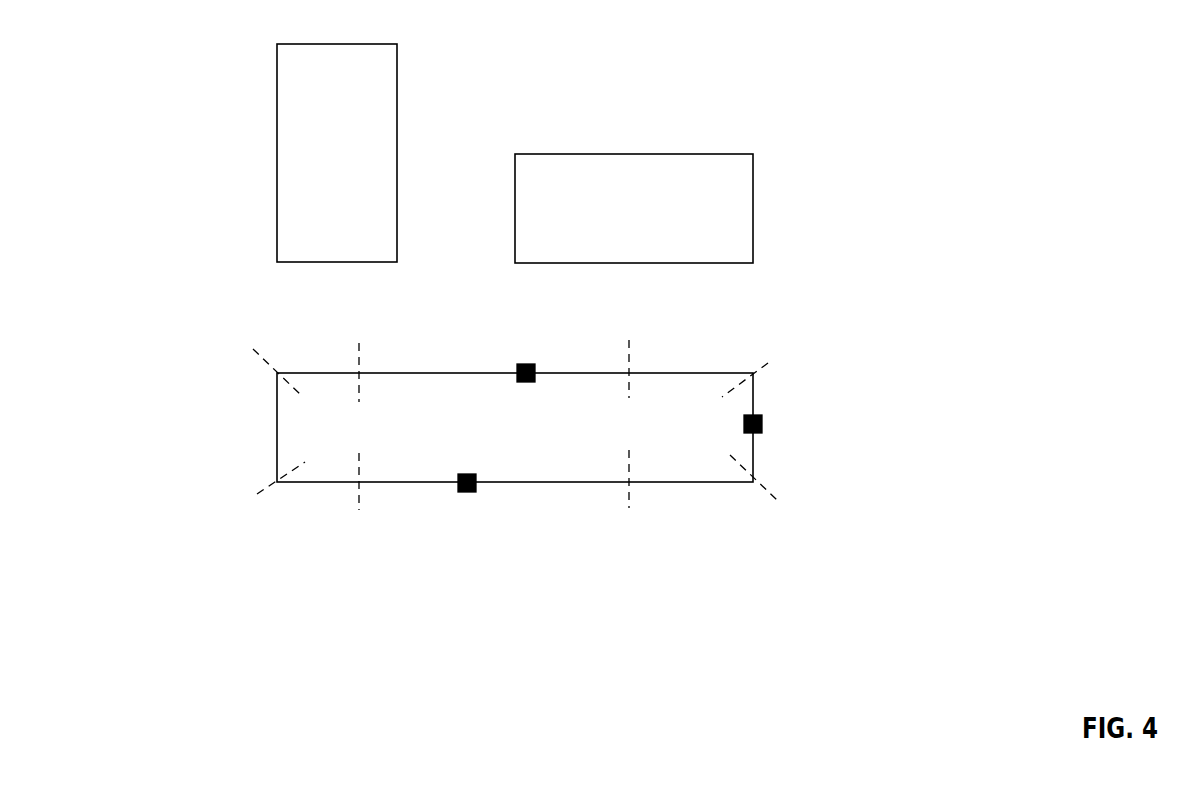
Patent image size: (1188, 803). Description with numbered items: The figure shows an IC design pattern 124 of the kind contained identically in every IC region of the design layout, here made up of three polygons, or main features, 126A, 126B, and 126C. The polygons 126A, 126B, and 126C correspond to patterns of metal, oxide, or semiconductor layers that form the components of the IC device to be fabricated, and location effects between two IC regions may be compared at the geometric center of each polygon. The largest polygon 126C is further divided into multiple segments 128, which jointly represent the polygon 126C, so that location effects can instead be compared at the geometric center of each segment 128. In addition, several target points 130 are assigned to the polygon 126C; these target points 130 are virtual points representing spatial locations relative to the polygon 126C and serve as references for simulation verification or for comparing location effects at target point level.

The IC design pattern 124 is at (893, 74).
The polygon 126A is at (359, 167).
The polygon 126B is at (655, 222).
The polygon 126C is at (547, 438).
The segments 128 is at (307, 373).
The target points 130 is at (537, 366).